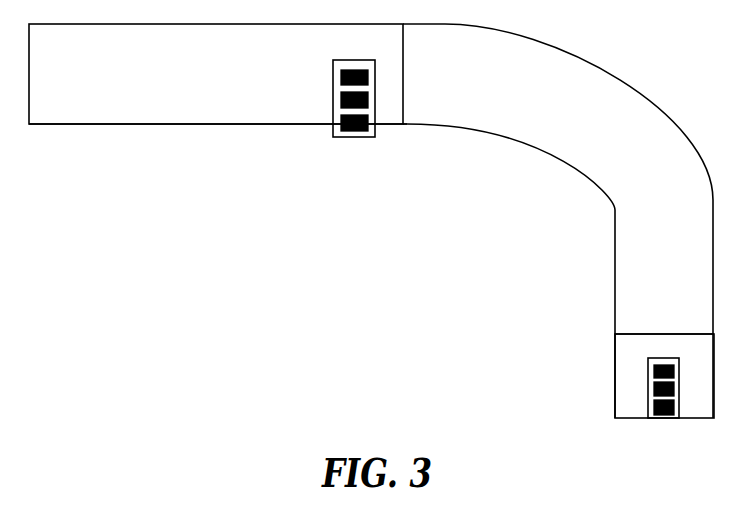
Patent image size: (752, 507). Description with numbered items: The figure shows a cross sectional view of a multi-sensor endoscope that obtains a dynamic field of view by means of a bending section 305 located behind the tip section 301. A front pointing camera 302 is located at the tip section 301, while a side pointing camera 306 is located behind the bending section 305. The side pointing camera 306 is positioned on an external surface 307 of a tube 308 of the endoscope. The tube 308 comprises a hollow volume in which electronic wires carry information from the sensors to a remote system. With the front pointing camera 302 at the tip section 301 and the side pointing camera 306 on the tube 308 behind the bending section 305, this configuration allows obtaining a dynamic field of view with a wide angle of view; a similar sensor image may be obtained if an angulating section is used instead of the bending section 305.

The tube 308 is at (189, 83).
The external surface 307 is at (188, 124).
The side pointing camera 306 is at (352, 135).
The bending section 305 is at (598, 121).
The front pointing camera 302 is at (653, 367).
The tip section 301 is at (697, 403).